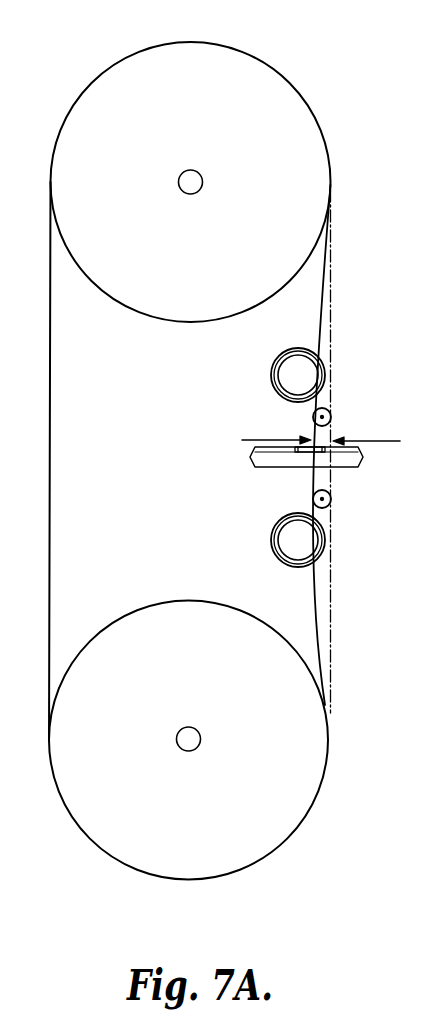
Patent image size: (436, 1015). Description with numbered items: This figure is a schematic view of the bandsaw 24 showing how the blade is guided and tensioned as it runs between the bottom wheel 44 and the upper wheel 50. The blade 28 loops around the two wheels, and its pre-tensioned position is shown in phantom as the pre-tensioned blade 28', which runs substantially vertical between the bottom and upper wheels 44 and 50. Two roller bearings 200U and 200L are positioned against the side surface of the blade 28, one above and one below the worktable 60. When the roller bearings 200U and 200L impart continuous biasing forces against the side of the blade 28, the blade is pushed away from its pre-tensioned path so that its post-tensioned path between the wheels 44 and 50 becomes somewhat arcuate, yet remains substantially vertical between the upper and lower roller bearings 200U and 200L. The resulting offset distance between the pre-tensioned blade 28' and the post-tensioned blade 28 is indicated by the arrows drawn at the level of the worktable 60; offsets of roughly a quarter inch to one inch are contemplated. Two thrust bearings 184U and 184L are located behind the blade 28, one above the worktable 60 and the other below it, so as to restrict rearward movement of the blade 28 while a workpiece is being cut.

The bandsaw 24 is at (96, 47).
The upper wheel 50 is at (267, 85).
The bottom wheel 44 is at (284, 816).
The blade 28 is at (190, 461).
The pre-tensioned blade 28' is at (367, 451).
The upper thrust bearing 184U is at (288, 373).
The lower thrust bearing 184L is at (282, 541).
The upper roller bearing 200U is at (331, 413).
The lower roller bearing 200L is at (331, 500).
The worktable 60 is at (255, 452).